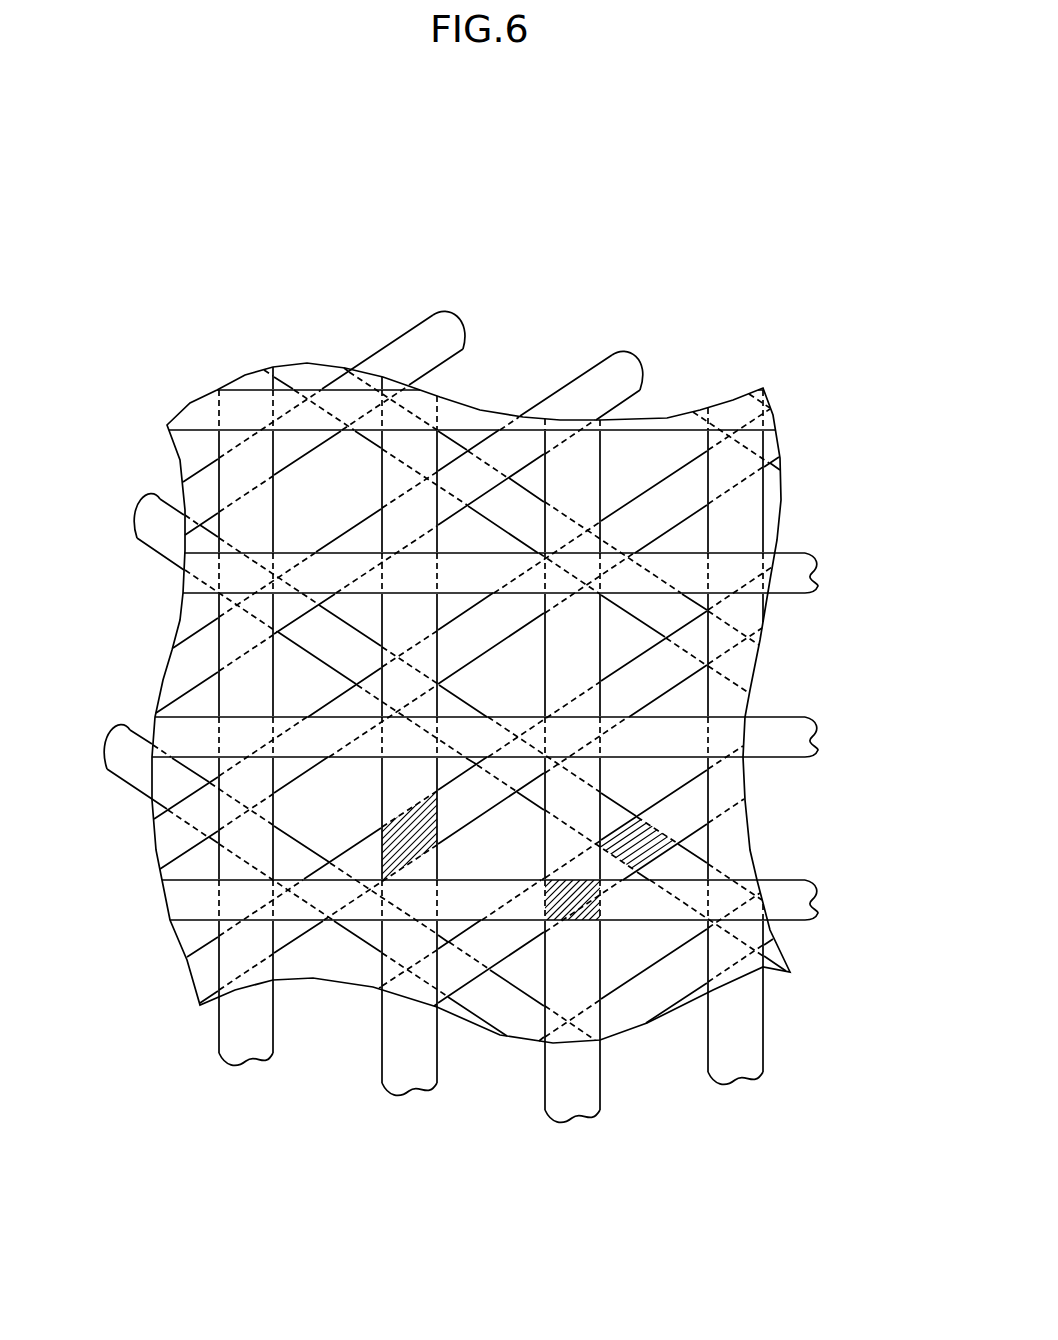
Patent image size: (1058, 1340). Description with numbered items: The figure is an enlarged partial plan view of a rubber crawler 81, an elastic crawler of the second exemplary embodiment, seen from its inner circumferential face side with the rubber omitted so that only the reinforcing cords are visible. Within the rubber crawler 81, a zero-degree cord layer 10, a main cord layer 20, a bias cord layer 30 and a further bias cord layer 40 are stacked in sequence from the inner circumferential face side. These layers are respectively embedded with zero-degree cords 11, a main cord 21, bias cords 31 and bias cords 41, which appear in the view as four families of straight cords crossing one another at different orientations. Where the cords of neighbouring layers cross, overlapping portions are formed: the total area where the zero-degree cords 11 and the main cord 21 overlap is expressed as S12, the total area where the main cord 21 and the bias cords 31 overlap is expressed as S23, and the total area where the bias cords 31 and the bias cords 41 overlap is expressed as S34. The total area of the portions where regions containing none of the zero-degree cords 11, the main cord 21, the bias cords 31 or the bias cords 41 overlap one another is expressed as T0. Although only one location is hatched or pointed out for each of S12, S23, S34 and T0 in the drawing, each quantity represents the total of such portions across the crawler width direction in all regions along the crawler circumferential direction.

The rubber crawler 81 is at (190, 348).
The 0° cord layer 10 is at (870, 598).
The 0° cords 11 is at (785, 597).
The main cord layer 20 is at (720, 1215).
The main cord 21 is at (585, 1100).
The bias cord layer 30 is at (590, 250).
The bias cords 31 is at (452, 320).
The bias cord layer 40 is at (77, 590).
The bias cords 41 is at (162, 547).
The total overlap area of 0° cords and main cord S12 is at (538, 902).
The total overlap area of main cord and bias cords 31 S23 is at (387, 848).
The total overlap area of bias cords 31 and bias cords 41 S34 is at (672, 838).
The total area of cord-free overlapping regions T0 is at (647, 950).